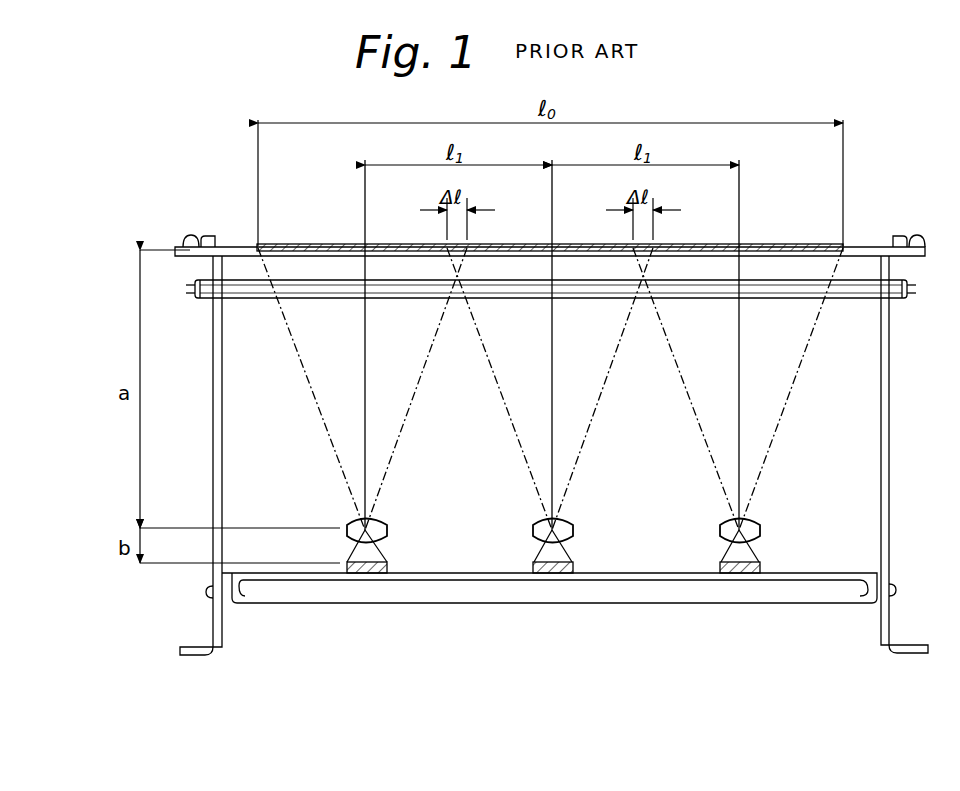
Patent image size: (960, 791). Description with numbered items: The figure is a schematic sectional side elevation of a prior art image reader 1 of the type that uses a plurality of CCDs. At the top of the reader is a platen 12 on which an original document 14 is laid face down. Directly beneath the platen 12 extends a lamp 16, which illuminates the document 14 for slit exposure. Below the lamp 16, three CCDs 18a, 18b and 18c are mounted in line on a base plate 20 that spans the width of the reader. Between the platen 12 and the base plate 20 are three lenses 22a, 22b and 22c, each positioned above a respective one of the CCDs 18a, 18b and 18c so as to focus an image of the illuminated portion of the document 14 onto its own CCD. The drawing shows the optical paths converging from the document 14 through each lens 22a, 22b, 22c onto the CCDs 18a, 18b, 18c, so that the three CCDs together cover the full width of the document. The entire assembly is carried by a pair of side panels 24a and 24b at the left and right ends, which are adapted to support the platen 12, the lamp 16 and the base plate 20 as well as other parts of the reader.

The image reading apparatus (prior art) 1 is at (915, 206).
The platen 12 is at (762, 250).
The original document 14 is at (826, 247).
The lamp 16 is at (856, 296).
The CCD 18a is at (367, 574).
The CCD 18b is at (553, 574).
The CCD 18c is at (740, 574).
The base plate 20 is at (826, 580).
The lens 22a is at (384, 530).
The lens 22b is at (571, 530).
The lens 22c is at (760, 530).
The side panel 24a is at (213, 452).
The side panel 24b is at (889, 420).